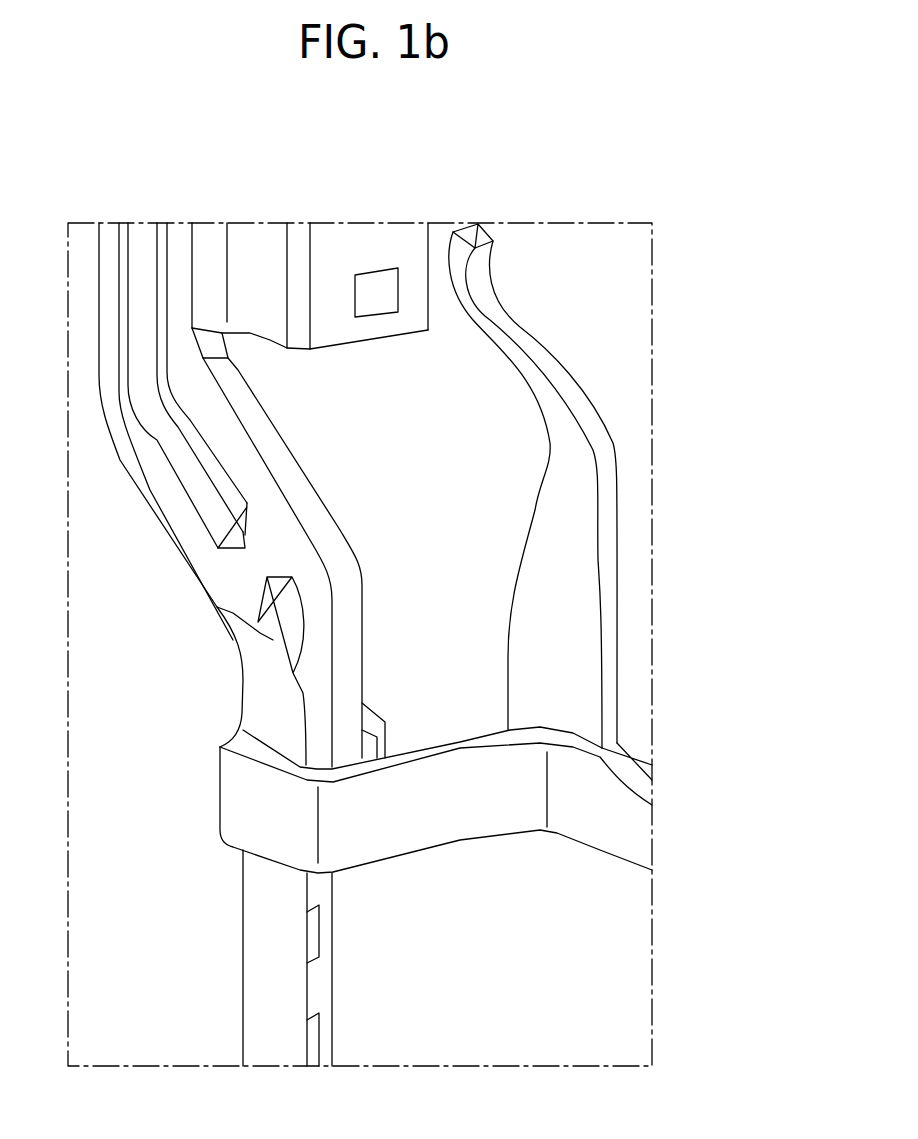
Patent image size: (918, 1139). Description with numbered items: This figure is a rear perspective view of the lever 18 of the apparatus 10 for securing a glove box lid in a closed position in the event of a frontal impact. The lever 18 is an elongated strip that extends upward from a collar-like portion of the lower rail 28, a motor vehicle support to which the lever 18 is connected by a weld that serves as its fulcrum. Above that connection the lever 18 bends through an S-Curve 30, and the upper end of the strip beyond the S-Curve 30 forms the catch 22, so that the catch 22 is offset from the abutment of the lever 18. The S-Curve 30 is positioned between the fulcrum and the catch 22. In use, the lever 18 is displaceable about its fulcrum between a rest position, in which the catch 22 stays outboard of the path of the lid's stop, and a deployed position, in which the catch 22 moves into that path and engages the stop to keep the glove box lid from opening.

The apparatus 10 is at (538, 200).
The lever 18 is at (598, 560).
The catch 22 is at (483, 288).
The lower rail 28 is at (443, 822).
The S-Curve 30 is at (607, 375).